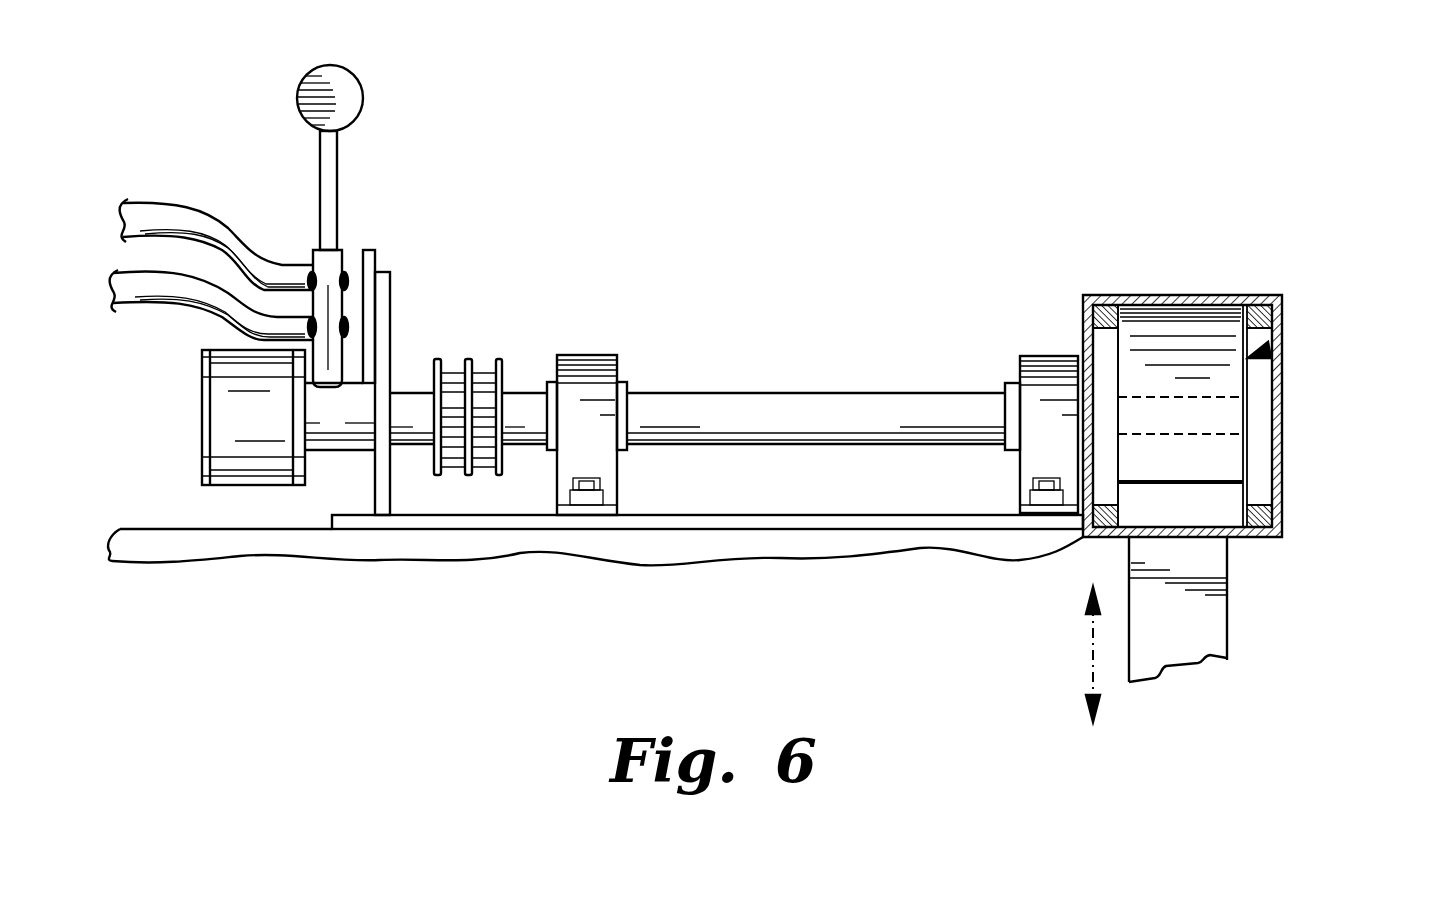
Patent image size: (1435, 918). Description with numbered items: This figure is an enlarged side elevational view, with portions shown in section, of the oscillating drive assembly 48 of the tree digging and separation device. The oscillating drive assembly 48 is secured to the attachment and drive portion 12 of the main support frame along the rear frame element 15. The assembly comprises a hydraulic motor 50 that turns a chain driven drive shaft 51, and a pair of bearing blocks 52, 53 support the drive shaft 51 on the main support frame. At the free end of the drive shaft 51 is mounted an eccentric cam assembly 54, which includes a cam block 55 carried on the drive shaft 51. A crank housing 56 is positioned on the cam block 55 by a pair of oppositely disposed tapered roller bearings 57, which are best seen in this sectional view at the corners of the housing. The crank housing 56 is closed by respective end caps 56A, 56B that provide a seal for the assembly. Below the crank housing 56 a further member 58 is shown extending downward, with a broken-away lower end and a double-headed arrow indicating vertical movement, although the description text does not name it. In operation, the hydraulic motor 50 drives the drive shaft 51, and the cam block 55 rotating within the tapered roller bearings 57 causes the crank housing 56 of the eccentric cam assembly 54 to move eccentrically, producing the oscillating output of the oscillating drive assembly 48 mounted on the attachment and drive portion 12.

The attachment and drive portion 12 is at (232, 572).
The rear frame element 15 is at (570, 545).
The oscillating drive assembly 48 is at (1183, 218).
The hydraulic motor 50 is at (250, 409).
The drive shaft 51 is at (750, 413).
The bearing block 52 is at (586, 372).
The bearing block 53 is at (1038, 365).
The eccentric cam assembly 54 is at (1275, 348).
The cam block 55 is at (1213, 380).
The crank housing 56 is at (1199, 424).
The end cap 56A is at (1282, 458).
The end cap 56B is at (1083, 315).
The tapered roller bearings 57 is at (1282, 516).
The vertical member 58 is at (1203, 628).